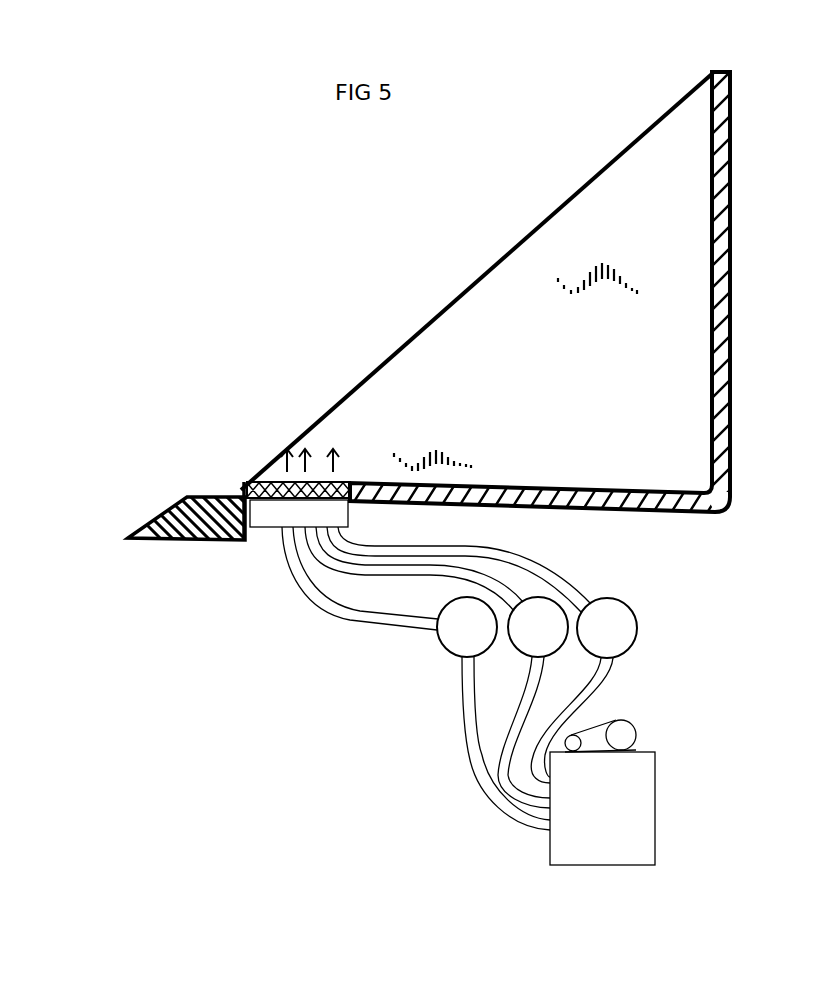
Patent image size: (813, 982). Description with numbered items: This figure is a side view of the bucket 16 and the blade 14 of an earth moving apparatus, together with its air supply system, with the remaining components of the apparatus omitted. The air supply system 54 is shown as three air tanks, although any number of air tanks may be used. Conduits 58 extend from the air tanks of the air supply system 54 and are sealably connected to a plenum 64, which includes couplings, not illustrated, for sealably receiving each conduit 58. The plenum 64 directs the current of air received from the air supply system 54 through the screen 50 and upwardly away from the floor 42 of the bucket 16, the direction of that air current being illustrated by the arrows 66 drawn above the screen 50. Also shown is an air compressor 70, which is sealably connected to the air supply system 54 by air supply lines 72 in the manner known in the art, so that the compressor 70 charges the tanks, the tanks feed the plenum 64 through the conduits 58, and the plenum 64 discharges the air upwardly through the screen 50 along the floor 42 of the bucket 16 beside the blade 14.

The blade 14 is at (192, 492).
The bucket 16 is at (733, 231).
The floor 42 is at (528, 486).
The screen 50 is at (350, 480).
The air supply system 54 is at (447, 645).
The conduits 58 is at (362, 621).
The plenum 64 is at (268, 530).
The arrows 66 is at (306, 462).
The air compressor 70 is at (657, 778).
The air supply lines 72 is at (468, 753).